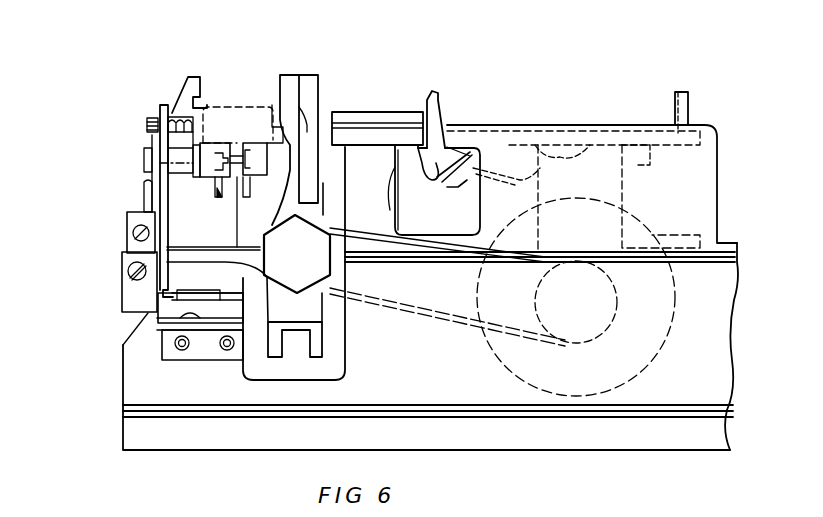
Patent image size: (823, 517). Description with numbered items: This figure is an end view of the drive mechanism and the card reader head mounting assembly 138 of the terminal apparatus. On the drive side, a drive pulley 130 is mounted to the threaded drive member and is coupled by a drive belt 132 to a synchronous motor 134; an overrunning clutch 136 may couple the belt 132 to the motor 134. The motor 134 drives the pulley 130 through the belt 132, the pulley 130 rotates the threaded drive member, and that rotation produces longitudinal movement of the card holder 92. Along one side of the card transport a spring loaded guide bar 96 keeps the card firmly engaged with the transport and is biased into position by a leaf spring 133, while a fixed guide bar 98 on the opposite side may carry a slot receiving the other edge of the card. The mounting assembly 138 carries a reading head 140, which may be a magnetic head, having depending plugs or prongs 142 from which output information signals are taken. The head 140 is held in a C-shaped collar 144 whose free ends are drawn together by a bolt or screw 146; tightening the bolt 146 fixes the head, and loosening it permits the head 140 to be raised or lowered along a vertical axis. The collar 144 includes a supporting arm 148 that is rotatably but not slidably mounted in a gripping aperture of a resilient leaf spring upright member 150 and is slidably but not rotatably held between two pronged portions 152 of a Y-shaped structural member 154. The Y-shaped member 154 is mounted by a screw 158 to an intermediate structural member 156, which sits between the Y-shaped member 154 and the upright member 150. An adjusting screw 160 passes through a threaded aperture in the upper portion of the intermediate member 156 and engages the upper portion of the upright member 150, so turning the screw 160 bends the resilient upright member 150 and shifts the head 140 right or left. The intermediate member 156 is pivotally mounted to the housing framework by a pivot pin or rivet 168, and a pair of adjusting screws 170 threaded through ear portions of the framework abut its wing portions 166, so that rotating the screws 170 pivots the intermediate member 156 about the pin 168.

The card holder 92 is at (315, 85).
The spring loaded guide bar 96 is at (437, 100).
The fixed guide bar 98 is at (190, 85).
The drive pulley 130 is at (308, 268).
The drive belt 132 is at (412, 310).
The leaf spring 133 is at (433, 187).
The synchronous motor 134 is at (590, 372).
The overrunning clutch 136 is at (600, 310).
The card reader head mounting assembly 138 is at (108, 222).
The reading head 140 is at (222, 113).
The depending plugs or prongs 142 is at (222, 200).
The C-shaped collar 144 is at (260, 143).
The bolt or screw 146 is at (257, 142).
The supporting arm 148 is at (172, 162).
The resilient or leaf spring upright member 150 is at (195, 210).
The pronged portions 152 is at (153, 137).
The Y-shaped structural member 154 is at (147, 183).
The intermediate structural member 156 is at (160, 107).
The screw 158 is at (140, 230).
The adjusting screw 160 is at (147, 123).
The wing portions 166 is at (135, 240).
The pivot pin or rivet 168 is at (220, 287).
The adjusting screws 170 is at (133, 280).